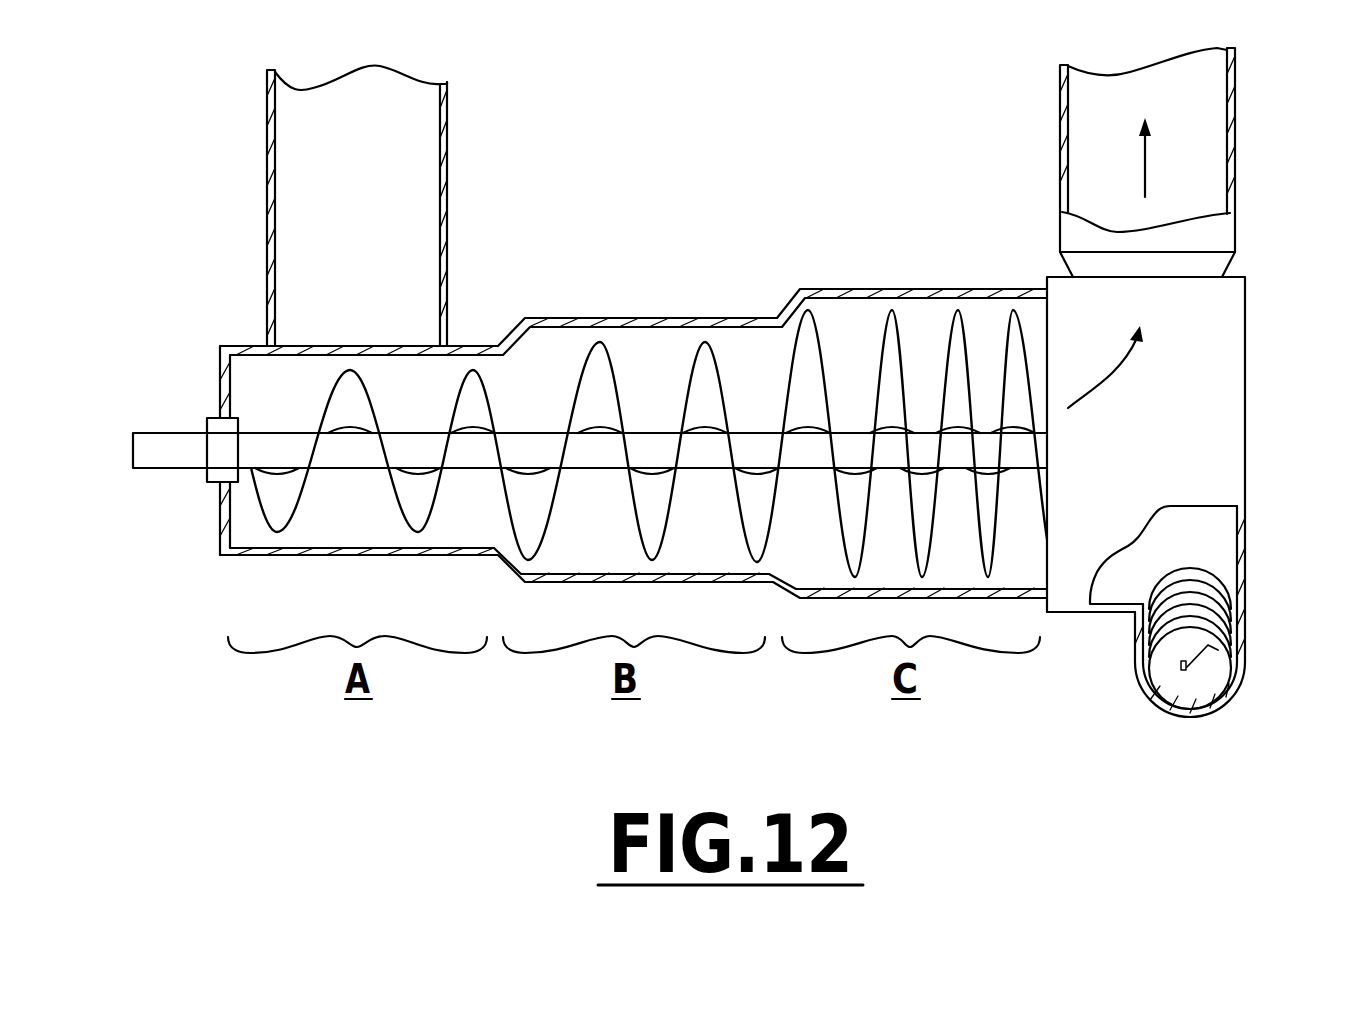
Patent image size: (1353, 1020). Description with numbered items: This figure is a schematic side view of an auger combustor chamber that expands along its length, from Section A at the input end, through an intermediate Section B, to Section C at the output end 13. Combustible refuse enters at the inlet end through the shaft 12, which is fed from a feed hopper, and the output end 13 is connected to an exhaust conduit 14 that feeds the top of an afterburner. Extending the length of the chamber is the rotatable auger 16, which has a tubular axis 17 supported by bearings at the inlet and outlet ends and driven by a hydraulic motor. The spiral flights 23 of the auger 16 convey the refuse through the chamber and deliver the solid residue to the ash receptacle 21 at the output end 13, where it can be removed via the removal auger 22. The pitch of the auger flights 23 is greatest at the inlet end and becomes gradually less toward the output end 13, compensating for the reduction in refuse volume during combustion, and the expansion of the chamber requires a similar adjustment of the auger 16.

The shaft 12 is at (307, 180).
The output end 13 is at (1193, 412).
The exhaust conduit 14 is at (1232, 183).
The rotatable auger 16 is at (526, 426).
The tubular axis 17 is at (168, 470).
The ash receptacle 21 is at (1240, 611).
The removal auger 22 is at (1158, 655).
The spiral flights 23 is at (880, 363).